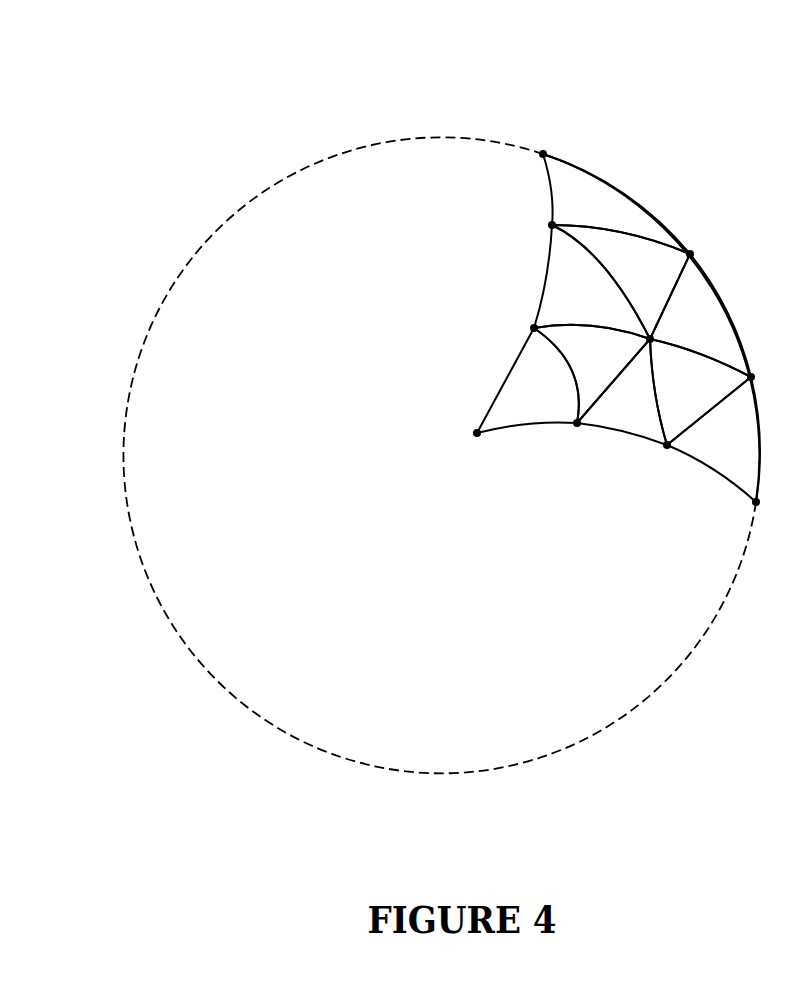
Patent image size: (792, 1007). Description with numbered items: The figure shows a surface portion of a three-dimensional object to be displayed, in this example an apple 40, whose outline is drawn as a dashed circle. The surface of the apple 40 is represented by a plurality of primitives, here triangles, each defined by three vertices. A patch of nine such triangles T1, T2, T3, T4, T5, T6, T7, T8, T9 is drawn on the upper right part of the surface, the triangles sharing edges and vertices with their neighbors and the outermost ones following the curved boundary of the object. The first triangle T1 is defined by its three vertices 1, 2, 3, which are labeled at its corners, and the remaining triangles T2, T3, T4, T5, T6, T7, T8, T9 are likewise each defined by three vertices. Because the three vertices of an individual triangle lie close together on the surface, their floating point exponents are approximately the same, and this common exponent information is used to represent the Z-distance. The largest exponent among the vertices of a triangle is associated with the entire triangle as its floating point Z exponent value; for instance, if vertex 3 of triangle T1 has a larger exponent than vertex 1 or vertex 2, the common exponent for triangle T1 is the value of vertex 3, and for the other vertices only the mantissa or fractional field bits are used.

The apple 40 is at (142, 123).
The vertex 1 is at (479, 436).
The vertex 2 is at (578, 426).
The vertex 3 is at (530, 328).
The triangle T1 is at (528, 380).
The triangle T2 is at (592, 374).
The triangle T3 is at (622, 392).
The triangle T4 is at (700, 392).
The triangle T5 is at (713, 439).
The triangle T6 is at (592, 282).
The triangle T7 is at (621, 282).
The triangle T8 is at (700, 315).
The triangle T9 is at (616, 204).